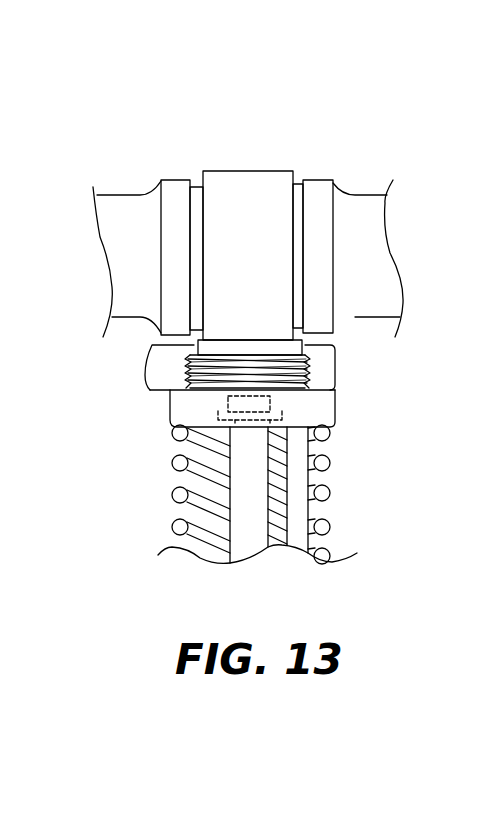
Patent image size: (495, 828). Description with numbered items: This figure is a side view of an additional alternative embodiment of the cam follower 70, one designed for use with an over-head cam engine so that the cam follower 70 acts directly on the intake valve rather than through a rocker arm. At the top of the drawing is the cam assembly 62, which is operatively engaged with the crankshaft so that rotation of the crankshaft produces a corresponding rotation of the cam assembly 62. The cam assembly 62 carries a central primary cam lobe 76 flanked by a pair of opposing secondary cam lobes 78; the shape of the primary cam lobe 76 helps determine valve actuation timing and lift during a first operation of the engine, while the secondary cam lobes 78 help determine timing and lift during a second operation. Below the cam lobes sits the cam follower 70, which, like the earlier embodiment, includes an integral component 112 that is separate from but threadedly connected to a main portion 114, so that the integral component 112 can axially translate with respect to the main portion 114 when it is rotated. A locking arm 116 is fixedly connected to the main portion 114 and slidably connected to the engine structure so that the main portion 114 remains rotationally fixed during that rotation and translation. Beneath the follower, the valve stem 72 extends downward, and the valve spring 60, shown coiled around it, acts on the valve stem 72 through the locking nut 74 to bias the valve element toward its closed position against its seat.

The valve spring 60 is at (332, 490).
The cam assembly 62 is at (357, 158).
The cam follower 70 is at (343, 422).
The valve stem 72 is at (238, 543).
The locking nut 74 is at (178, 405).
The primary cam lobe 76 is at (248, 170).
The secondary cam lobes 78 is at (172, 179).
The integral component 112 is at (325, 370).
The main portion 114 is at (215, 352).
The locking arm 116 is at (300, 540).